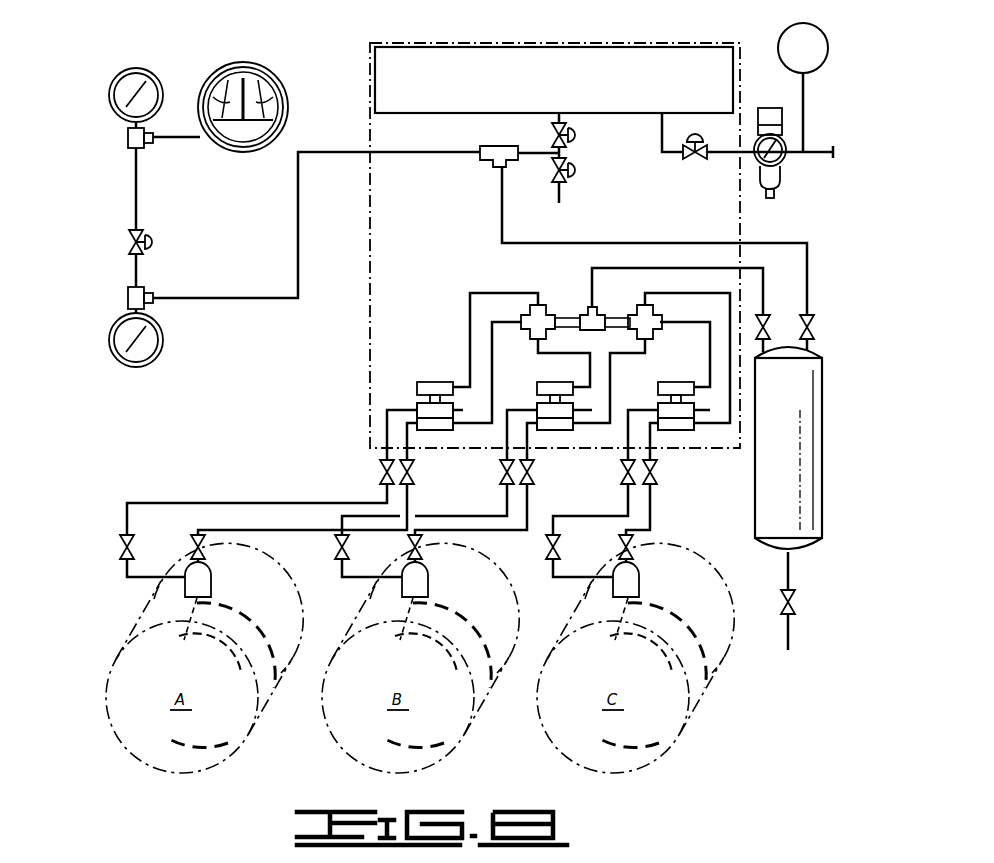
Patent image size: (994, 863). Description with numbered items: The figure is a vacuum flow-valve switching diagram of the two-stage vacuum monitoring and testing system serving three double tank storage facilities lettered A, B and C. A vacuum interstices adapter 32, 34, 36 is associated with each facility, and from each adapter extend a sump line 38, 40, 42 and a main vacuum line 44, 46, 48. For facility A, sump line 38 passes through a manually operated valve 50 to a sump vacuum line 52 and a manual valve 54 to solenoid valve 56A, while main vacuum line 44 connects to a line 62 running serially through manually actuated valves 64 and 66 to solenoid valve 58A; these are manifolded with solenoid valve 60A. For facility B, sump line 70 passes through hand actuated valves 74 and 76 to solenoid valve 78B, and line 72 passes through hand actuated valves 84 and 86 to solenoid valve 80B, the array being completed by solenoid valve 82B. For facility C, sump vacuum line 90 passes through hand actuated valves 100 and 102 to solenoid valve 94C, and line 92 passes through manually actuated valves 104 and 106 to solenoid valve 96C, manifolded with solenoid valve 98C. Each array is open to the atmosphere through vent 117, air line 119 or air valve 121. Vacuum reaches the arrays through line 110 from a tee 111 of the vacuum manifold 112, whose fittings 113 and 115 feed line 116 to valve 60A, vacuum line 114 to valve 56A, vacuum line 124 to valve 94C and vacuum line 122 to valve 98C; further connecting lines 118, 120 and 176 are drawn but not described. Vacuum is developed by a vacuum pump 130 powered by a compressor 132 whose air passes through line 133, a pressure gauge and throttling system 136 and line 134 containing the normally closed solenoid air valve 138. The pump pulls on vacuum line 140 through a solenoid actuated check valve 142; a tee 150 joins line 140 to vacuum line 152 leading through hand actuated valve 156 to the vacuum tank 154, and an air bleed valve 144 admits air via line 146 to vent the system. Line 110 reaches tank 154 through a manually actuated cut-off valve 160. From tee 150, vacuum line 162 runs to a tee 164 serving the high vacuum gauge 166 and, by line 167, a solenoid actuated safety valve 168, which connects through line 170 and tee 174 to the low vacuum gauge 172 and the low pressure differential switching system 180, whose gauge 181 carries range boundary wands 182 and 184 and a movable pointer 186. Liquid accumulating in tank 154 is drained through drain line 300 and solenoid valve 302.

The vacuum interstices adapter 32 is at (212, 582).
The vacuum interstices adapter 34 is at (429, 582).
The vacuum interstices adapter 36 is at (640, 582).
The sump line 38 is at (264, 618).
The sump line 40 is at (474, 603).
The sump line 42 is at (694, 618).
The main vacuum line 44 is at (226, 648).
The main vacuum line 46 is at (393, 645).
The main vacuum line 48 is at (600, 645).
The manually operated valve 50 is at (190, 544).
The sump vacuum line 52 is at (285, 532).
The manual valve 54 is at (414, 476).
The solenoid valve 56A is at (437, 428).
The solenoid valve 58A is at (425, 410).
The solenoid valve 60A is at (435, 386).
The line 62 is at (132, 580).
The manually actuated valve 64 is at (118, 547).
The manually actuated valve 66 is at (381, 474).
The sump line 70 is at (505, 533).
The line 72 is at (363, 595).
The hand actuated valve 74 is at (420, 542).
The hand actuated valve 76 is at (534, 476).
The solenoid valve 78B is at (556, 428).
The solenoid valve 80B is at (545, 410).
The solenoid valve 82B is at (545, 388).
The hand actuated valve 84 is at (337, 557).
The hand actuated valve 86 is at (500, 474).
The sump vacuum line 90 is at (653, 508).
The line 92 is at (575, 580).
The solenoid valve 94C is at (678, 428).
The solenoid valve 96C is at (665, 410).
The solenoid valve 98C is at (676, 386).
The hand actuated valve 100 is at (618, 545).
The hand actuated valve 102 is at (657, 476).
The manually actuated valve 104 is at (565, 540).
The manually actuated valve 106 is at (622, 474).
The line 110 is at (590, 268).
The tee 111 is at (598, 315).
The vacuum manifold 112 is at (566, 316).
The fitting 113 is at (537, 318).
The vacuum line 114 is at (500, 322).
The fitting 115 is at (652, 318).
The line 116 is at (495, 292).
The atmospheric vent 117 is at (460, 410).
The line 118 is at (631, 355).
The air line open to the atmosphere 119 is at (585, 412).
The line 120 is at (552, 355).
The air valve 121 is at (704, 412).
The vacuum line 122 is at (688, 330).
The vacuum line 124 is at (668, 293).
The vacuum pump 130 is at (532, 84).
The compressor 132 is at (782, 40).
The line 133 is at (801, 90).
The line 134 is at (722, 157).
The pressure gauge and throttling system 136 is at (786, 165).
The solenoid air valve 138 is at (687, 160).
The vacuum line 140 is at (540, 160).
The solenoid actuated check valve 142 is at (548, 130).
The air bleed valve 144 is at (566, 175).
The line 146 is at (562, 200).
The tee 150 is at (494, 162).
The vacuum line 152 is at (653, 242).
The vacuum tank 154 is at (792, 447).
The hand actuated valve 156 is at (812, 325).
The manually actuated cut-off valve 160 is at (760, 340).
The vacuum line 162 is at (386, 157).
The tee 164 is at (128, 298).
The high vacuum gauge 166 is at (160, 340).
The line 167 is at (140, 275).
The solenoid actuated safety valve 168 is at (144, 238).
The line 170 is at (133, 203).
The low vacuum gauge 172 is at (128, 75).
The tee 174 is at (152, 142).
The line 176 is at (172, 133).
The low pressure differential switching system 180 is at (285, 70).
The gauge 181 is at (240, 140).
The wand 182 is at (225, 76).
The wand 184 is at (284, 92).
The movable wand or pointer 186 is at (243, 75).
The drain line 300 is at (792, 634).
The solenoid valve 302 is at (796, 597).